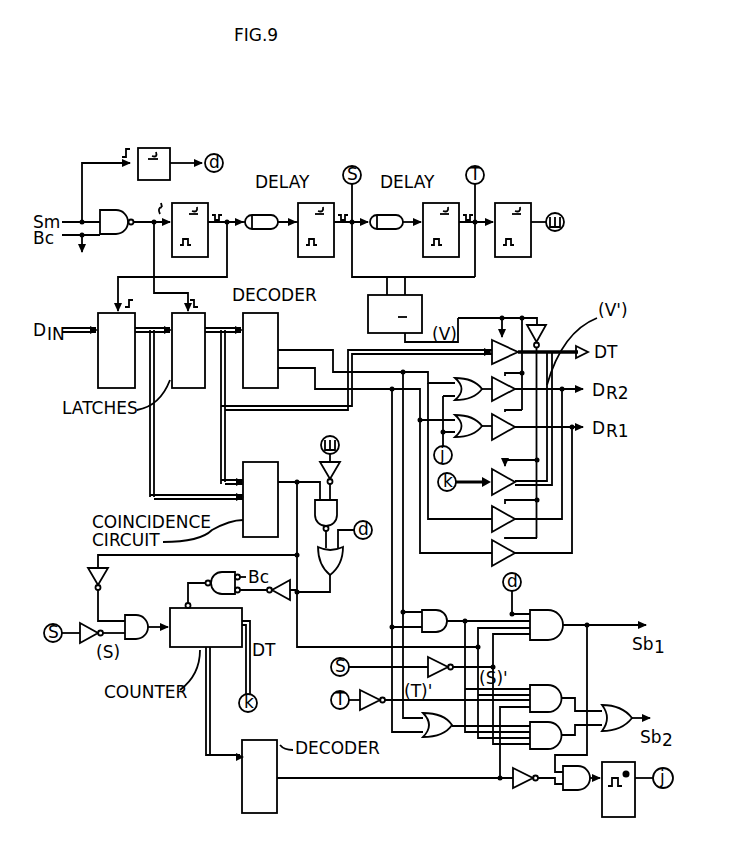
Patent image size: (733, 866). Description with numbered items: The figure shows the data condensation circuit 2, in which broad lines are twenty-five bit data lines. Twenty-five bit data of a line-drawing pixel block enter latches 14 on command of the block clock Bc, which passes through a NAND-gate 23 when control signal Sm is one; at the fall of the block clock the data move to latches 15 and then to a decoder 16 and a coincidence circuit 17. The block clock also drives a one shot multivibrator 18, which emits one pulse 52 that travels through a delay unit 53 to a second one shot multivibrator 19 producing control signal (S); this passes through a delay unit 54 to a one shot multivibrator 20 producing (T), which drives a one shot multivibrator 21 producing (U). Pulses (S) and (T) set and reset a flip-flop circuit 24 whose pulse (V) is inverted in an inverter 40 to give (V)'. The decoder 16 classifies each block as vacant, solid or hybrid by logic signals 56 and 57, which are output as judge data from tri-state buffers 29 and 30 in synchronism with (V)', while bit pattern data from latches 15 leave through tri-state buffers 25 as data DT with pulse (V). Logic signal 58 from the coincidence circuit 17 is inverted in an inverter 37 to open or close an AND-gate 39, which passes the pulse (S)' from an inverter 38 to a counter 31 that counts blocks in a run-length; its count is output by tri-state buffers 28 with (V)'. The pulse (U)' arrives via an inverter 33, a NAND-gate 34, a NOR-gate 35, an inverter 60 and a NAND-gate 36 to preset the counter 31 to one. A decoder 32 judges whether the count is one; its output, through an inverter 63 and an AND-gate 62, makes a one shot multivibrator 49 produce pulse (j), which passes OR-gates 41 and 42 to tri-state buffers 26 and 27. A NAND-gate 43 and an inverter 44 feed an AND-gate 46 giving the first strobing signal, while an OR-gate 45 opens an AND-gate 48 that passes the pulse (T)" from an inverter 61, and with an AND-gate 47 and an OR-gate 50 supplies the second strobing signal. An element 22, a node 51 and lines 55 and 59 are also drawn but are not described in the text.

The condensation circuit 2 is at (302, 166).
The latches 14 is at (171, 400).
The latches 15 is at (332, 393).
The decoder 16 is at (260, 350).
The coincidence circuit 17 is at (360, 554).
The one shot multivibrator 18 is at (200, 258).
The one shot multivibrator 19 is at (318, 260).
The one shot multivibrator 20 is at (433, 258).
The one shot multivibrator 21 is at (522, 258).
The flip-flop 22 is at (158, 181).
The NAND-gate 23 is at (118, 237).
The flip-flop circuit 24 is at (422, 323).
The tri-state buffers 25 is at (492, 346).
The tri-state buffer 26 is at (492, 380).
The tri-state buffer 27 is at (500, 438).
The tri-state buffers 28 is at (492, 488).
The tri-state buffer 29 is at (492, 524).
The tri-state buffer 30 is at (492, 560).
The counter 31 is at (210, 672).
The decoder 32 is at (377, 776).
The inverter 33 is at (339, 472).
The NAND-gate 34 is at (338, 500).
The NOR-gate 35 is at (338, 560).
The NAND-gate 36 is at (216, 573).
The inverter 37 is at (108, 576).
The inverter 38 is at (86, 642).
The AND-gate 39 is at (140, 640).
The inverter 40 is at (550, 429).
The OR-gate 41 is at (464, 386).
The OR-gate 42 is at (460, 420).
The NAND-gate 43 is at (436, 612).
The inverter 44 is at (441, 676).
The OR-gate 45 is at (444, 738).
The AND-gate 46 is at (588, 691).
The AND-gate 47 is at (566, 698).
The AND-gate 48 is at (566, 735).
The one shot multivibrator 49 is at (627, 789).
The OR-gate 50 is at (622, 712).
The node 51 is at (152, 222).
The pulse 52 is at (244, 220).
The delay unit 53 is at (272, 230).
The delay unit 54 is at (396, 230).
The line 55 is at (290, 226).
The logic signal 56 is at (322, 370).
The logic signal 57 is at (296, 369).
The logic signal 58 is at (294, 476).
The line 59 is at (478, 318).
The inverter 60 is at (283, 601).
The inverter 61 is at (370, 706).
The AND-gate 62 is at (576, 791).
The inverter 63 is at (521, 790).